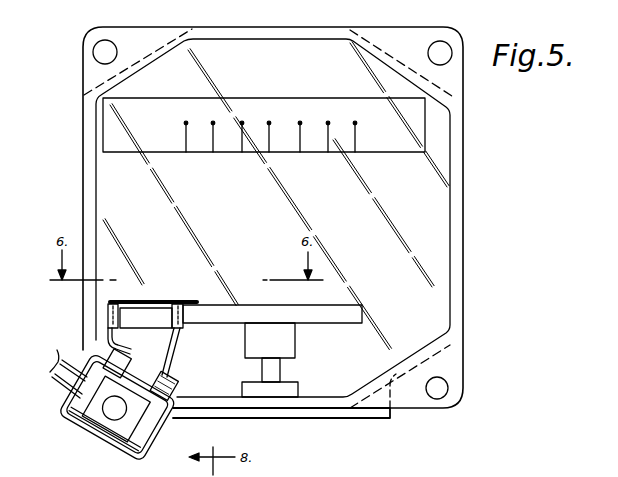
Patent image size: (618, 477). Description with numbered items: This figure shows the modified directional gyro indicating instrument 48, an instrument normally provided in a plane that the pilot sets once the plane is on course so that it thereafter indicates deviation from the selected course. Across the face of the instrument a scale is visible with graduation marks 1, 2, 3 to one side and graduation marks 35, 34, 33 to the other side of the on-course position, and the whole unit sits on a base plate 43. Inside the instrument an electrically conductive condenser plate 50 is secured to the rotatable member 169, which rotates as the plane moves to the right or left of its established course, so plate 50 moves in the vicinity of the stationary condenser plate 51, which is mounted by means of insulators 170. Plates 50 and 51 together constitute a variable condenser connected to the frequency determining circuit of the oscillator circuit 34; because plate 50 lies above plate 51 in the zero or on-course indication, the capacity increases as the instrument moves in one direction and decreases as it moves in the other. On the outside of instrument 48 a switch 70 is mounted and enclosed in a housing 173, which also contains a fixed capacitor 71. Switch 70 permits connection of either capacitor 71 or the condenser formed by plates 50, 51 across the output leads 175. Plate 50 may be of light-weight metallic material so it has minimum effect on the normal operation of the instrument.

The scale graduation mark 1 is at (242, 128).
The scale graduation mark 2 is at (213, 128).
The scale graduation mark 3 is at (186, 128).
The scale graduation mark 33 is at (354, 128).
The oscillator circuit 34 is at (327, 128).
The scale graduation mark 35 is at (299, 128).
The base plate 43 is at (245, 476).
The directional gyro indicating instrument 48 is at (466, 278).
The condenser plate 50 is at (148, 301).
The stationary condenser plate 51 is at (158, 308).
The switch 70 is at (93, 410).
The fixed capacitor 71 is at (85, 453).
The rotatable member 169 is at (345, 323).
The insulators 170 is at (152, 362).
The housing 173 is at (93, 440).
The output leads 175 is at (57, 350).